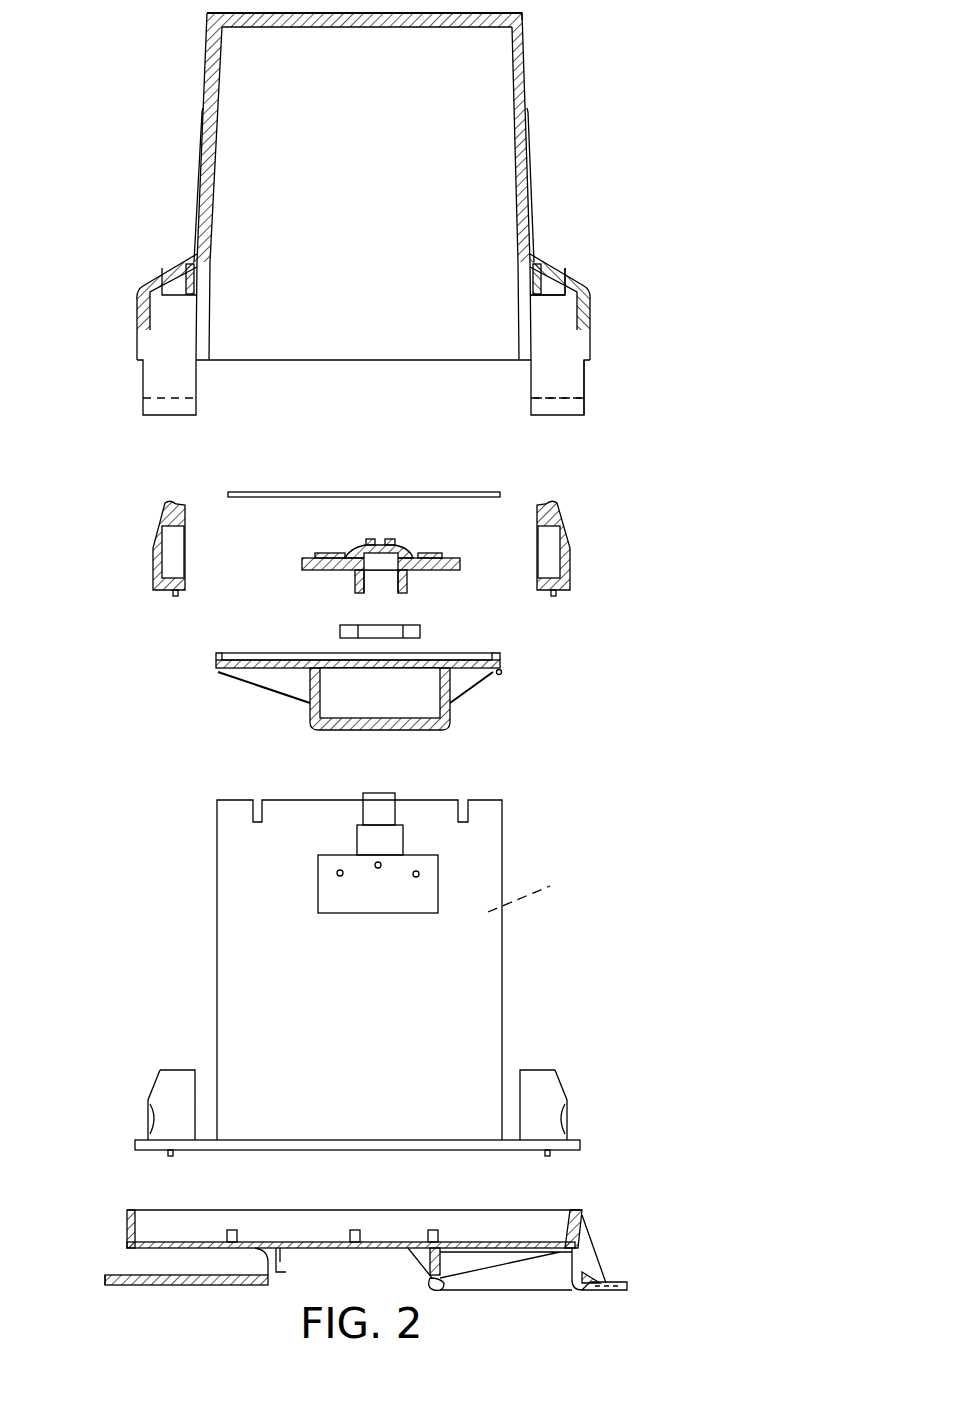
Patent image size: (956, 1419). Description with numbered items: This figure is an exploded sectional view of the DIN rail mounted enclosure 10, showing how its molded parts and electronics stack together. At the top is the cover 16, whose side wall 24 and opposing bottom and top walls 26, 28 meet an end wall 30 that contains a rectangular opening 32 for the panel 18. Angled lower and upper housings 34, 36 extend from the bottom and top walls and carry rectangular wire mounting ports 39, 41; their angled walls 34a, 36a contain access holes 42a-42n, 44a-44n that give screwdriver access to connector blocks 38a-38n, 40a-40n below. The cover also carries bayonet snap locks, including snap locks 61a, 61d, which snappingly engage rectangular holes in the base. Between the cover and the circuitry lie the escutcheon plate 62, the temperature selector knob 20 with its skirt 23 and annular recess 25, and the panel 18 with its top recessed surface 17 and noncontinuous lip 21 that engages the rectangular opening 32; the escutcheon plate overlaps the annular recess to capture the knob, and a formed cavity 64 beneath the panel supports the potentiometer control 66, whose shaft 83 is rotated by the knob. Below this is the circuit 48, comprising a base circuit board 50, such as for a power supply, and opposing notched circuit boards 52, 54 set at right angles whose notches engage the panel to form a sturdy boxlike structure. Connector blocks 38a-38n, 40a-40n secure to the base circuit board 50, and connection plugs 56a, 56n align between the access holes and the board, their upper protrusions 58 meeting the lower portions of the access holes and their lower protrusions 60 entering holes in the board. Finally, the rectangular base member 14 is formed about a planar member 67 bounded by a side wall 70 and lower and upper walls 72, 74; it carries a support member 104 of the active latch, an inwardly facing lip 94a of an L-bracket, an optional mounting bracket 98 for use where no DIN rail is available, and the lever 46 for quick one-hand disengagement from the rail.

The DIN rail mounted enclosure 10 is at (684, 49).
The rectangular base member 14 is at (612, 1245).
The cover 16 is at (420, 207).
The top recessed surface 17 is at (300, 660).
The panel 18 is at (246, 656).
The temperature selector knob 20 is at (432, 548).
The noncontinuous lip 21 is at (505, 674).
The skirt 23 is at (325, 558).
The right side wall 24 is at (367, 193).
The annular recess 25 is at (318, 562).
The bottom wall 26 is at (200, 142).
The top wall 28 is at (531, 184).
The end wall 30 is at (521, 20).
The rectangular opening 32 is at (484, 18).
The angled lower housing 34 is at (160, 270).
The angled wall 34a is at (150, 287).
The angled upper housing 36 is at (580, 291).
The angled wall 36a is at (562, 280).
The connector blocks 38a-38n is at (155, 1087).
The rectangular wire mounting port 39 is at (150, 340).
The connector blocks 40a-40n is at (555, 1087).
The rectangular wire mounting port 41 is at (570, 358).
The access holes 42a-42n is at (180, 270).
The access holes 44a-44n is at (548, 262).
The lever 46 is at (132, 1287).
The circuit 48 is at (562, 980).
The base circuit board 50 is at (548, 1153).
The notched circuit board 52 is at (488, 942).
The notched circuit board 54 is at (534, 892).
The connection plug 56a is at (156, 554).
The connection plug 56n is at (570, 548).
The upper protrusions 58 is at (168, 504).
The lower protrusions 60 is at (175, 592).
The bayonet snap lock 61a is at (150, 386).
The bayonet snap lock 61d is at (568, 388).
The escutcheon plate 62 is at (410, 493).
The formed cavity 64 is at (379, 675).
The potentiometer control 66 is at (370, 902).
The planar member 67 is at (355, 1250).
The side wall 70 is at (402, 1215).
The lower wall 72 is at (126, 1236).
The upper wall 74 is at (590, 1237).
The shaft 83 is at (375, 802).
The inwardly facing lip 94a is at (440, 1288).
The mounting bracket 98 is at (626, 1288).
The support member 104 is at (290, 1270).